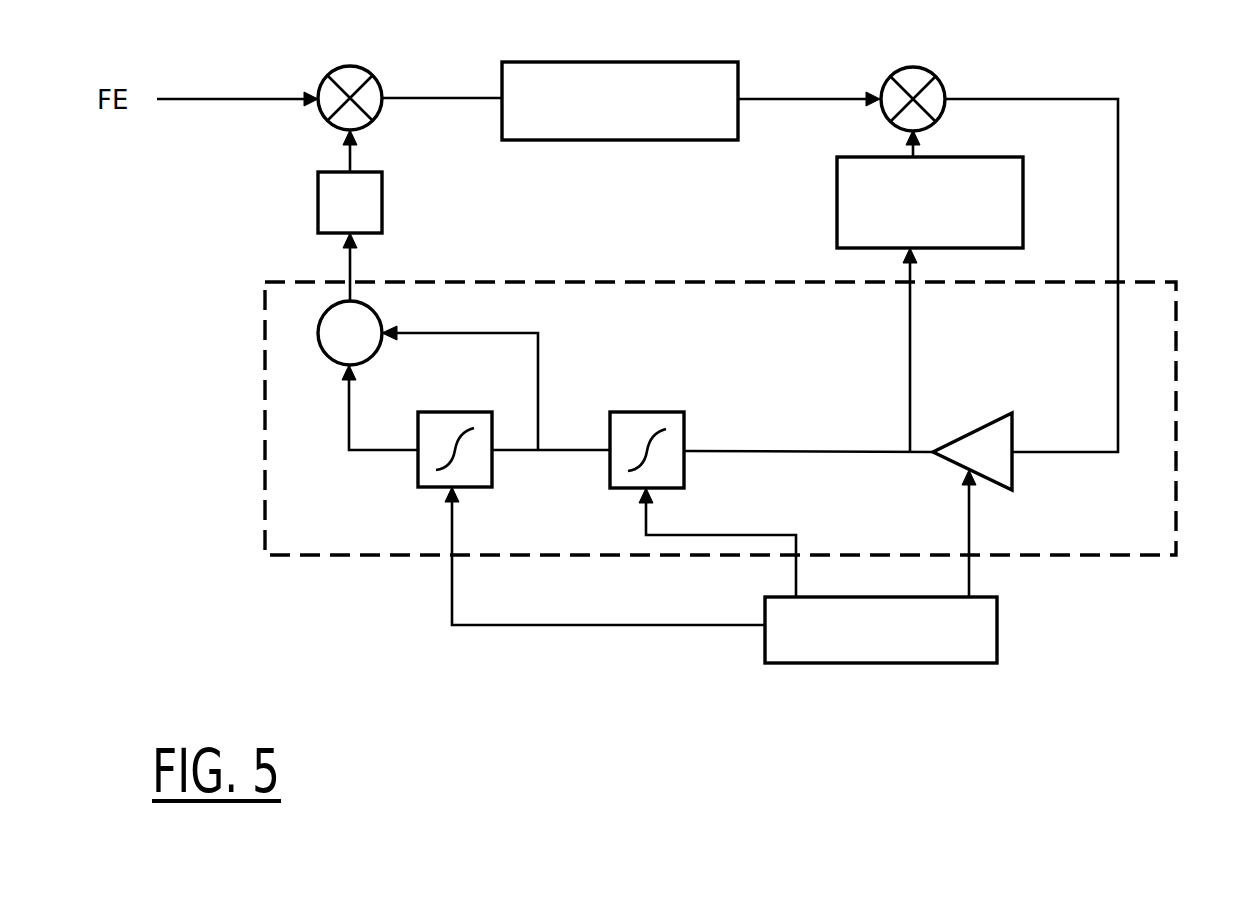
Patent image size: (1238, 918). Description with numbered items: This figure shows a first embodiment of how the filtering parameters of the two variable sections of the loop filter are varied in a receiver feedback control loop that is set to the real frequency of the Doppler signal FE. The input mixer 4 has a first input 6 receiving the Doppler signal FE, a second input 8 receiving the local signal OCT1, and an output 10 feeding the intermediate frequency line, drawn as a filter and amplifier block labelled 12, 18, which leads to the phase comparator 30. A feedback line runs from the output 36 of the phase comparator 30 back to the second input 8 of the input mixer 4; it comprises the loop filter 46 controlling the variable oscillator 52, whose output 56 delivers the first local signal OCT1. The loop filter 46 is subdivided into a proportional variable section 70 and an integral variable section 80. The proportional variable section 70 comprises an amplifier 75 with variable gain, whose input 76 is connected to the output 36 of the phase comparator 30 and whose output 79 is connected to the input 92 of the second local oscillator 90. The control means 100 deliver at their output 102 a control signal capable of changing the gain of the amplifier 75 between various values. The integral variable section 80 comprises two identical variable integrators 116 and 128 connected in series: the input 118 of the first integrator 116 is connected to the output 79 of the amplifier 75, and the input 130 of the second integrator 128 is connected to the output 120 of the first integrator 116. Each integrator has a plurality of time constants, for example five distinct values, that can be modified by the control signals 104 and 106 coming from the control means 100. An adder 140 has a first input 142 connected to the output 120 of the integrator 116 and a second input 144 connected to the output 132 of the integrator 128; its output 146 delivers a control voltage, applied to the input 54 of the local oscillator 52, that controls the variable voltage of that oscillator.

The input mixer 4 is at (352, 58).
The first input 6 is at (313, 112).
The second input 8 is at (373, 126).
The output 10 is at (386, 95).
The filter 12 is at (620, 74).
The amplifier 18 is at (606, 62).
The phase comparator 30 is at (912, 68).
The output 36 is at (950, 92).
The loop filter 46 is at (1176, 358).
The variable oscillator 52 is at (382, 196).
The input 54 is at (356, 236).
The oscillator output 56 is at (348, 156).
The proportional variable section 70 is at (890, 358).
The amplifier 75 is at (972, 428).
The input 76 is at (1016, 455).
The output 79 is at (934, 460).
The integral variable section 80 is at (746, 363).
The second local oscillator 90 is at (1023, 182).
The input 92 is at (924, 248).
The control means 100 is at (835, 664).
The output 102 is at (969, 530).
The control signal 104 is at (728, 535).
The control signal 106 is at (452, 532).
The first integrator 116 is at (638, 412).
The input 118 is at (686, 442).
The output 120 is at (610, 450).
The second integrator 128 is at (451, 412).
The input 130 is at (492, 452).
The output 132 is at (416, 452).
The adder 140 is at (324, 306).
The first input 142 is at (380, 350).
The second input 144 is at (334, 372).
The output 146 is at (358, 298).